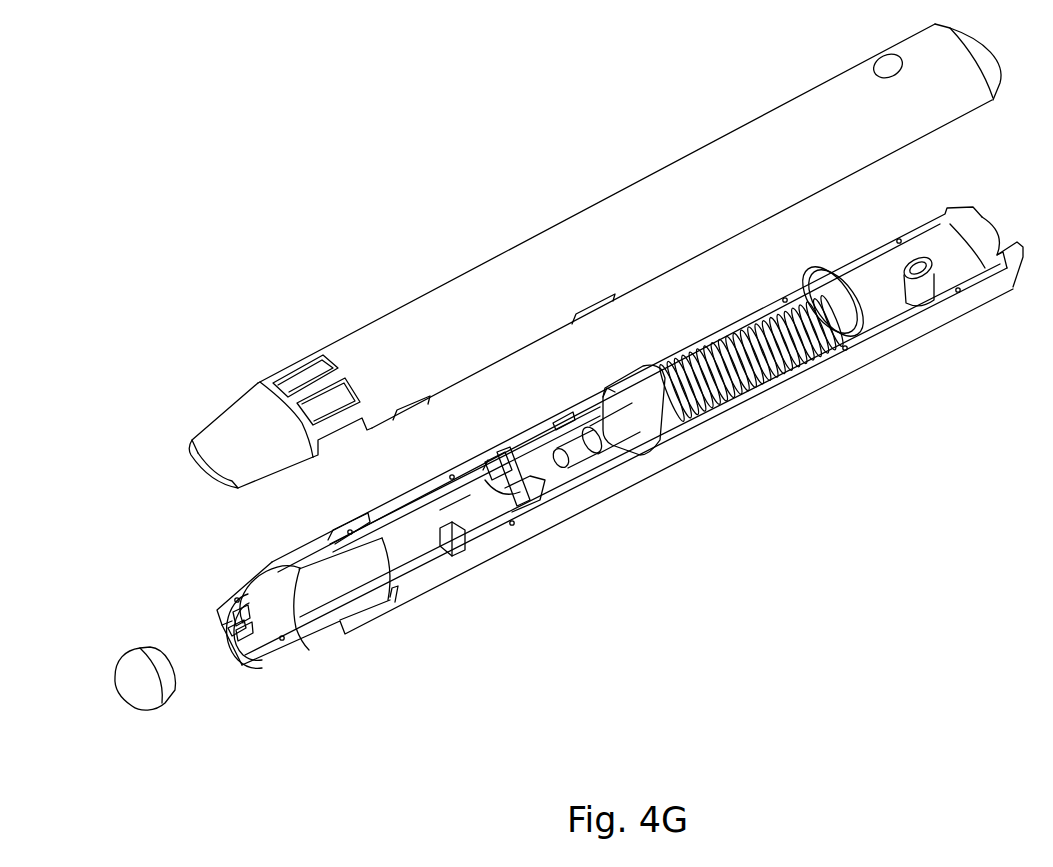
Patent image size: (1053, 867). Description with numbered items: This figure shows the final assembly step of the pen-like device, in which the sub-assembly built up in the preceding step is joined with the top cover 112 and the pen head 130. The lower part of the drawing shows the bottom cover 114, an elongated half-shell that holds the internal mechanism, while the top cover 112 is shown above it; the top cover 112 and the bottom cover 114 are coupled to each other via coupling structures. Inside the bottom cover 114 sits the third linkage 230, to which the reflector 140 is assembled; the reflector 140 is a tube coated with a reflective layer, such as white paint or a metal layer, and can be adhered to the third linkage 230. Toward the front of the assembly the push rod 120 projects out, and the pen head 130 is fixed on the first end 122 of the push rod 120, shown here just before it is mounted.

The top cover 112 is at (635, 210).
The bottom cover 114 is at (802, 397).
The push rod 120 is at (253, 643).
The first end 122 is at (233, 635).
The pen head 130 is at (128, 677).
The reflector 140 is at (298, 605).
The third linkage 230 is at (347, 578).